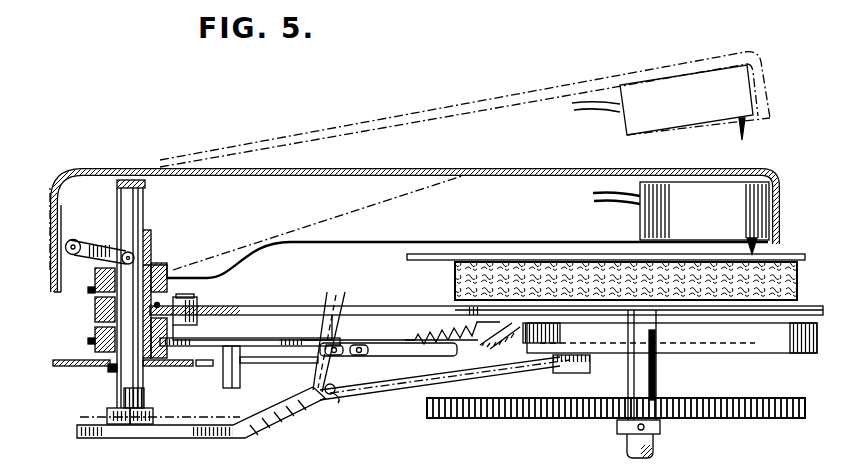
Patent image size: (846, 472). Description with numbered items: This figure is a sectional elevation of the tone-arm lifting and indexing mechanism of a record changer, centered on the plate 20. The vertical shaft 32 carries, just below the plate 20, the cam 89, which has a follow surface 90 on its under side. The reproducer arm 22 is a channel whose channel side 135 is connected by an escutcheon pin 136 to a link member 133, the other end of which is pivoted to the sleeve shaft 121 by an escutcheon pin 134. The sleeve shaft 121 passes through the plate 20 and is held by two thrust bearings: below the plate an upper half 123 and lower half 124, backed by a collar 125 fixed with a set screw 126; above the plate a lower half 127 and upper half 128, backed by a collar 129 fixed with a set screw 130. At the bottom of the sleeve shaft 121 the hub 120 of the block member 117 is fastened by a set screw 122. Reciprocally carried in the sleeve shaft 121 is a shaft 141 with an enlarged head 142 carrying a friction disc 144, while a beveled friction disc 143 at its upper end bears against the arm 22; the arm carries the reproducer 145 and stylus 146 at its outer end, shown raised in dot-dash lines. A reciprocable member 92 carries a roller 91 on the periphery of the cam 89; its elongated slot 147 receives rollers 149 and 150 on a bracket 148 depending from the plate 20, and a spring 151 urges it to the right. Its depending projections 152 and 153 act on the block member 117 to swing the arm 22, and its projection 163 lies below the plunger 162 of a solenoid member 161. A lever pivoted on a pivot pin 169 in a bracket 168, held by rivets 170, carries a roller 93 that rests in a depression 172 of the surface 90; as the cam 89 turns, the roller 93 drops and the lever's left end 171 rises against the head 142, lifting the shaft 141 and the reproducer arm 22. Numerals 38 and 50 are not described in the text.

The top plate 20 is at (255, 300).
The reproducer arm 22 is at (386, 118).
The shaft 32 is at (656, 379).
The gear 38 is at (700, 420).
The base plate 50 is at (587, 463).
The cam 89 is at (766, 346).
The follow surface 90 is at (792, 354).
The roller 91 is at (545, 350).
The reciprocable member 92 is at (383, 368).
The roller 93 is at (585, 360).
The block member 117 is at (172, 368).
The hub 120 is at (147, 376).
The sleeve shaft 121 is at (147, 226).
The set screw 122 is at (102, 372).
The upper half of thrust bearing 123 is at (92, 305).
The lower half of thrust bearing 124 is at (92, 322).
The collar 125 is at (178, 348).
The set screw 126 is at (92, 338).
The lower half of second thrust bearing 127 is at (90, 290).
The upper half of second thrust bearing 128 is at (160, 274).
The collar 129 is at (152, 257).
The set screw 130 is at (60, 288).
The link member 133 is at (77, 243).
The escutcheon pin 134 is at (150, 243).
The channel side 135 is at (402, 217).
The escutcheon pin 136 is at (63, 213).
The shaft 141 is at (137, 210).
The enlarged head 142 is at (117, 426).
The friction disc 143 is at (158, 174).
The friction disc 144 is at (143, 426).
The reproducer 145 is at (667, 95).
The stylus 146 is at (747, 135).
The elongated slot 147 is at (391, 347).
The bracket 148 is at (370, 340).
The roller 149 is at (396, 312).
The roller 150 is at (342, 342).
The spring 151 is at (455, 315).
The depending projection 152 is at (229, 380).
The depending projection 153 is at (128, 384).
The solenoid member 161 is at (203, 304).
The plunger 162 is at (200, 313).
The projection 163 is at (177, 333).
The bracket 168 is at (310, 327).
The pivot pin 169 is at (327, 384).
The rivets 170 is at (330, 344).
The left end of lever member 171 is at (197, 432).
The depression 172 is at (558, 343).